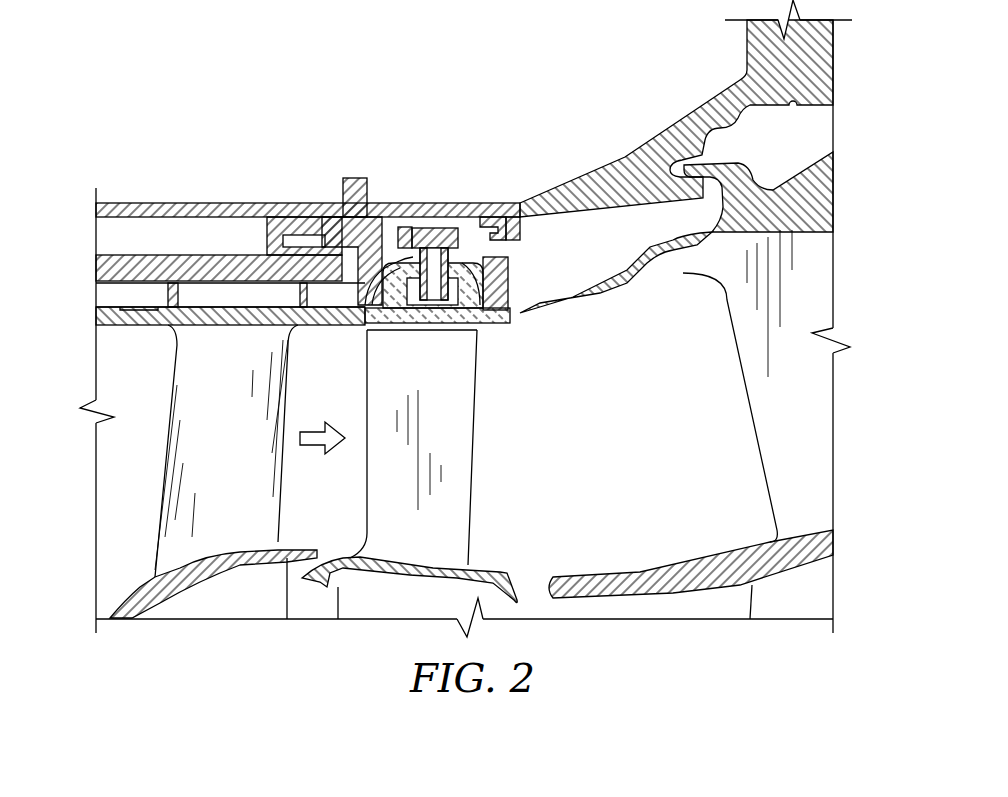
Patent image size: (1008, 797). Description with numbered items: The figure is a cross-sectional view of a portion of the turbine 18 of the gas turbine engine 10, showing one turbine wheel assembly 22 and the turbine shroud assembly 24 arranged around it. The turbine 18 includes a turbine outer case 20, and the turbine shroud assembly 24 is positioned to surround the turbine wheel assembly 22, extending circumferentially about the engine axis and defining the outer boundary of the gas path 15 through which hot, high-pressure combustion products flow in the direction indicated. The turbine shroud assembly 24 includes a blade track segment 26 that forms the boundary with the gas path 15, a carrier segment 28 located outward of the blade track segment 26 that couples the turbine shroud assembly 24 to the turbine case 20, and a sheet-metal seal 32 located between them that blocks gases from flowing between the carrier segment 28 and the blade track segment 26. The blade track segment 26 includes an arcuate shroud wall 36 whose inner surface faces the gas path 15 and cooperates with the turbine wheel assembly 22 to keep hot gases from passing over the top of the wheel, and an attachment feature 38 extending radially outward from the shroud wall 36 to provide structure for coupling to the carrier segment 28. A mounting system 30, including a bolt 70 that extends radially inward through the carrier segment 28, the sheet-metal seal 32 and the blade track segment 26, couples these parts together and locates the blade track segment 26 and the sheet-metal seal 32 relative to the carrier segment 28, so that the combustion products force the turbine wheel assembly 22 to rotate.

The gas turbine engine 10 is at (166, 121).
The gas path 15 is at (320, 448).
The turbine 18 is at (123, 153).
The turbine outer case 20 is at (593, 173).
The turbine wheel assembly 22 is at (519, 547).
The turbine shroud assembly 24 is at (434, 178).
The blade track segment 26 is at (495, 335).
The carrier segment 28 is at (476, 220).
The mounting system 30 is at (401, 212).
The sheet-metal seal 32 is at (487, 263).
The shroud wall 36 is at (507, 318).
The attachment feature 38 is at (385, 293).
The bolt 70 is at (440, 238).